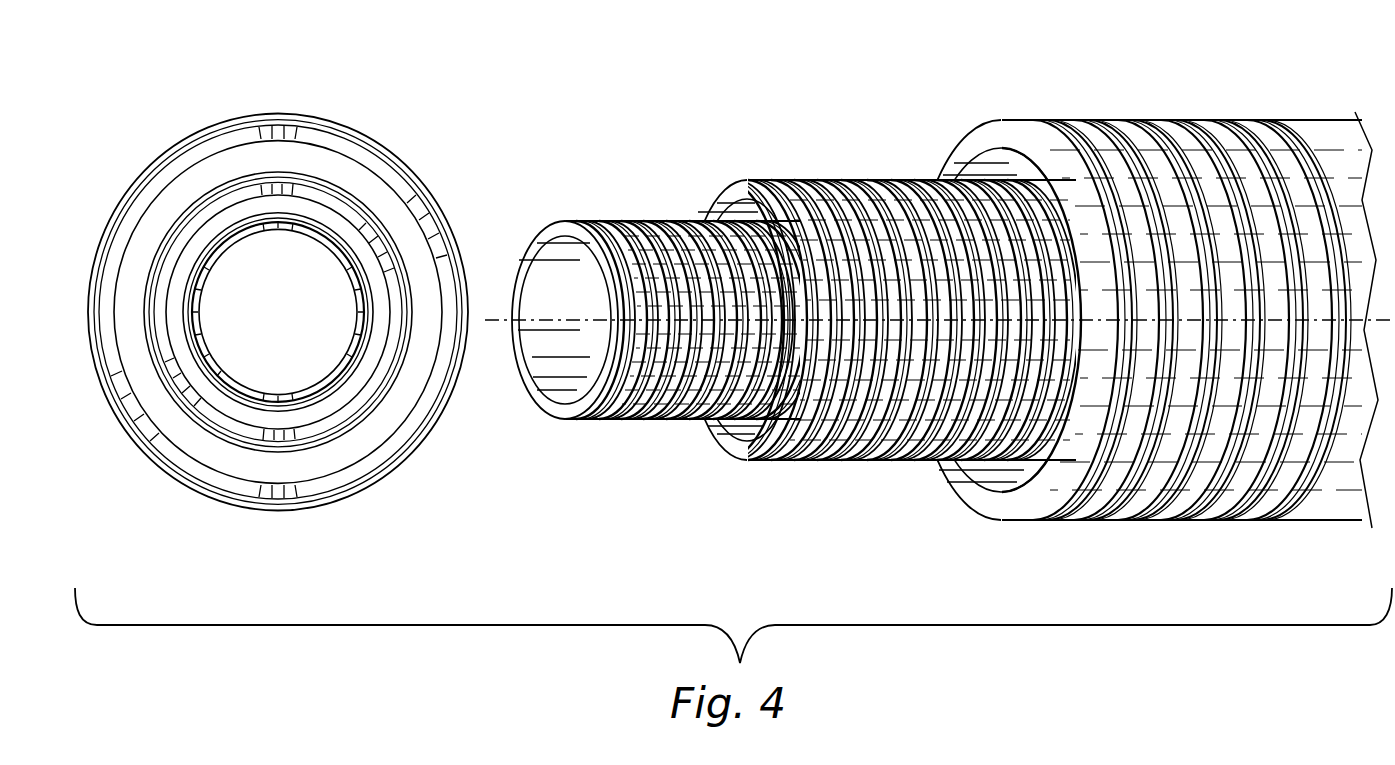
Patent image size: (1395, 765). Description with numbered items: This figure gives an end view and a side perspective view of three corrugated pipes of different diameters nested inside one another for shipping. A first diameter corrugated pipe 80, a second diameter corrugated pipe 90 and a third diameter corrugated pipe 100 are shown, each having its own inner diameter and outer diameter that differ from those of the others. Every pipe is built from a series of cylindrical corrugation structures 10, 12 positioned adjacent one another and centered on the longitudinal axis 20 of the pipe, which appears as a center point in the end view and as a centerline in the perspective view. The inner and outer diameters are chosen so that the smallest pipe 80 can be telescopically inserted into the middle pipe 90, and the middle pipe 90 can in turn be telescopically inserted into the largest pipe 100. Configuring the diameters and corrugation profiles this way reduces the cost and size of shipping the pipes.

The corrugation structure 10 is at (1100, 122).
The corrugation structure 12 is at (1140, 123).
The longitudinal axis 20 is at (278, 312).
The first diameter corrugated pipe 80 is at (512, 448).
The second diameter corrugated pipe 90 is at (187, 402).
The third diameter corrugated pipe 100 is at (278, 312).